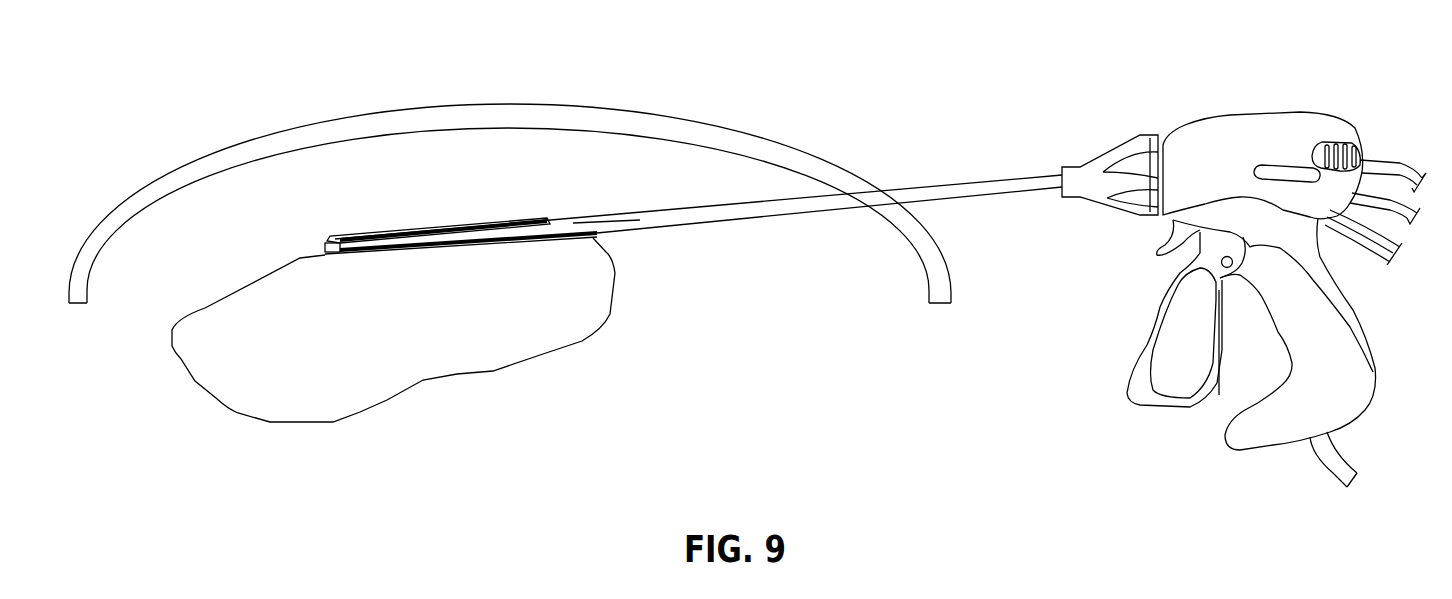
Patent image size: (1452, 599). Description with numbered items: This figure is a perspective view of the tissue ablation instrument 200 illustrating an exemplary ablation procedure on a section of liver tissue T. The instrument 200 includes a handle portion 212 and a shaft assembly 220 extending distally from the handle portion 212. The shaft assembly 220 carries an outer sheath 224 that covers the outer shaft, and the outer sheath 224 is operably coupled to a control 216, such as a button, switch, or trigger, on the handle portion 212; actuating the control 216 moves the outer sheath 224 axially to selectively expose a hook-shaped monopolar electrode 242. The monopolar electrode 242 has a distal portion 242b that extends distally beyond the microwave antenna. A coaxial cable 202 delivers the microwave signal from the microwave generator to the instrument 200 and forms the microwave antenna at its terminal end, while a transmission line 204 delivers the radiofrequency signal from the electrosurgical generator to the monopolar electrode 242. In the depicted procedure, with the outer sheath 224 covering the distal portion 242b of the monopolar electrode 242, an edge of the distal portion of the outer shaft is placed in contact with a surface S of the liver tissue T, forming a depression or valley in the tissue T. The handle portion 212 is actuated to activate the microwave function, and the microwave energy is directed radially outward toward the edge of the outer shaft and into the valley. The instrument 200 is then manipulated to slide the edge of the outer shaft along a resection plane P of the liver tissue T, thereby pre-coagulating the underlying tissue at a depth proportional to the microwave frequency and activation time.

The tissue ablation instrument 200 is at (1134, 112).
The handle portion 212 is at (1208, 140).
The control 216 is at (1140, 377).
The shaft assembly 220 is at (747, 226).
The outer sheath 224 is at (973, 180).
The monopolar electrode 242 is at (335, 230).
The distal portion 242b is at (323, 248).
The coaxial cable 202 is at (1400, 168).
The transmission line 204 is at (1400, 207).
The surface S is at (207, 308).
The liver tissue T is at (460, 375).
The resection plane P is at (317, 255).